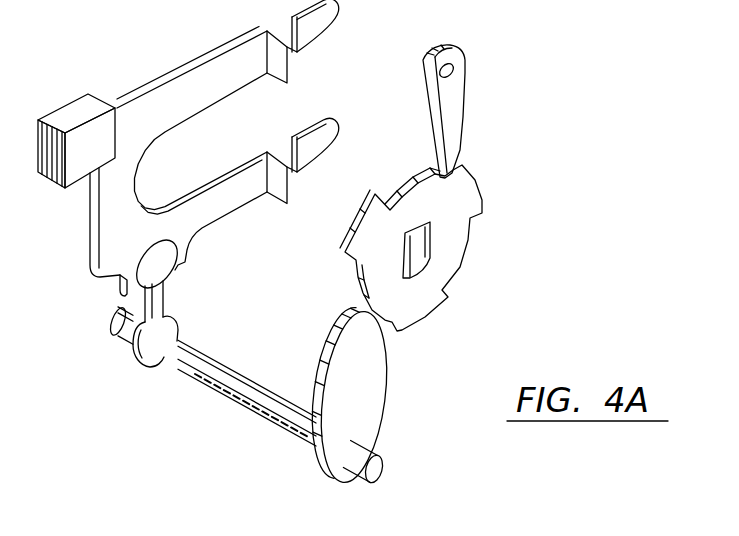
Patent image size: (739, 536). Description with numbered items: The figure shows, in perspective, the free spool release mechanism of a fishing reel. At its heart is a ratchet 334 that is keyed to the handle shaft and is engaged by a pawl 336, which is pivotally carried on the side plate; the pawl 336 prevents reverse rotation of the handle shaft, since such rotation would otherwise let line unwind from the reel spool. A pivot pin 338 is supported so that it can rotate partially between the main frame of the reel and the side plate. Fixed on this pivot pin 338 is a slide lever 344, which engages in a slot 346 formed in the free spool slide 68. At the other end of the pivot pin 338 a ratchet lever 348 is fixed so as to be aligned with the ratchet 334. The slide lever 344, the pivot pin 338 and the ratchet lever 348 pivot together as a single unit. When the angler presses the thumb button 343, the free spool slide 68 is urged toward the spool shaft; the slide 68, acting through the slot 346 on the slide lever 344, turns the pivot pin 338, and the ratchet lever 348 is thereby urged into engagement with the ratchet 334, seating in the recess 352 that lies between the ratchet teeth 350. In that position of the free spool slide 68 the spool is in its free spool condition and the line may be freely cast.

The free spool slide 68 is at (168, 107).
The thumb button 343 is at (73, 112).
The slot 346 is at (141, 268).
The slide lever 344 is at (155, 277).
The pivot pin 338 is at (227, 392).
The ratchet lever 348 is at (373, 383).
The recess 352 is at (463, 257).
The ratchet teeth 350 is at (481, 185).
The ratchet 334 is at (412, 201).
The pawl 336 is at (452, 98).